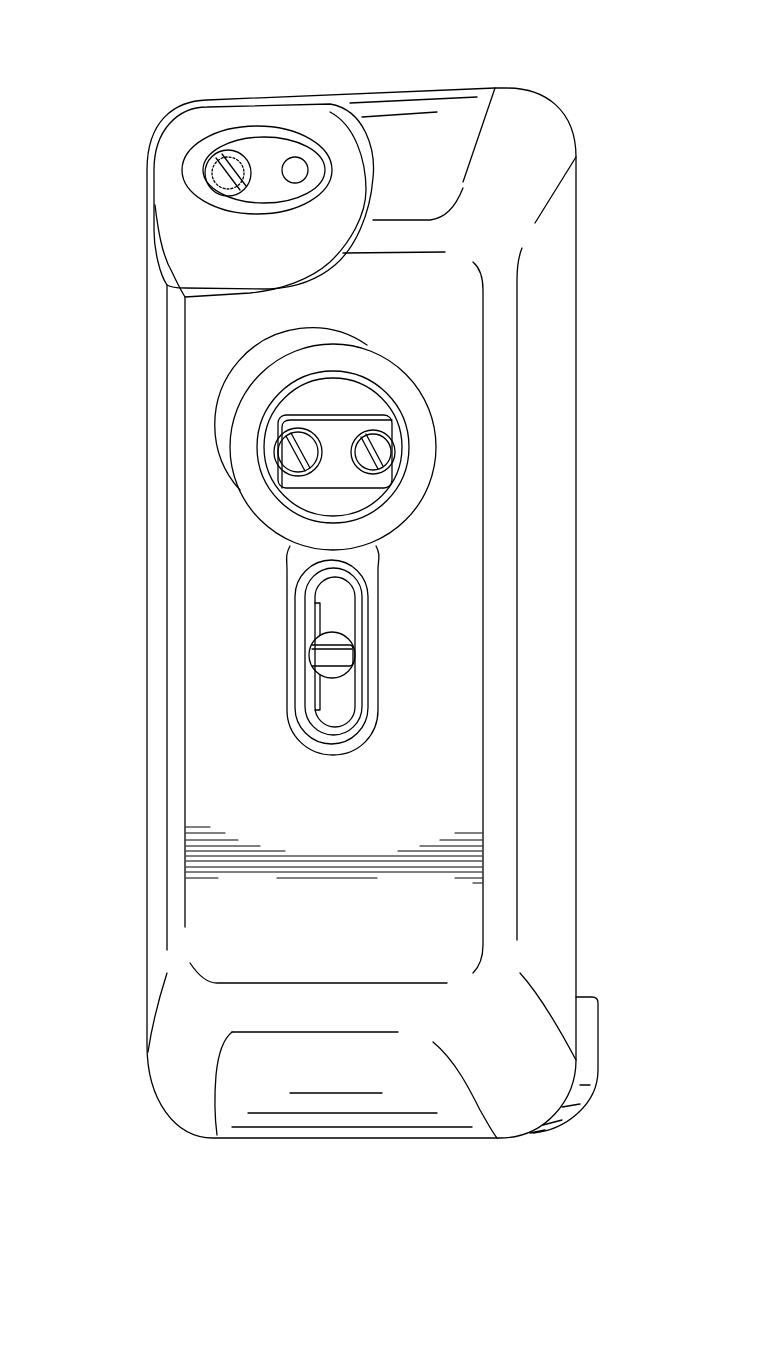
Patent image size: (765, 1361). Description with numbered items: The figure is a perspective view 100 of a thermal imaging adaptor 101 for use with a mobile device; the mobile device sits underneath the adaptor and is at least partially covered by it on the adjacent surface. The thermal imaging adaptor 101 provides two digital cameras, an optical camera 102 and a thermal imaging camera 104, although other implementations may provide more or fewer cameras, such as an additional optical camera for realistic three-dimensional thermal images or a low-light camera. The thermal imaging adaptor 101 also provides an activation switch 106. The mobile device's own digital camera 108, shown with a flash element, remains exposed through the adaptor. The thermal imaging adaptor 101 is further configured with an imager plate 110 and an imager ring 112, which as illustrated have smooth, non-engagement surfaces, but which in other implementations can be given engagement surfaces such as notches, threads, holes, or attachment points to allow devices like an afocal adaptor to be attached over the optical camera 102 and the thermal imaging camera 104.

The perspective view 100 is at (227, 70).
The thermal imaging adaptor 101 is at (567, 912).
The optical camera 102 is at (293, 463).
The thermal imaging camera 104 is at (383, 443).
The activation switch 106 is at (312, 653).
The digital camera 108 is at (212, 192).
The imager plate 110 is at (367, 498).
The imager ring 112 is at (268, 393).